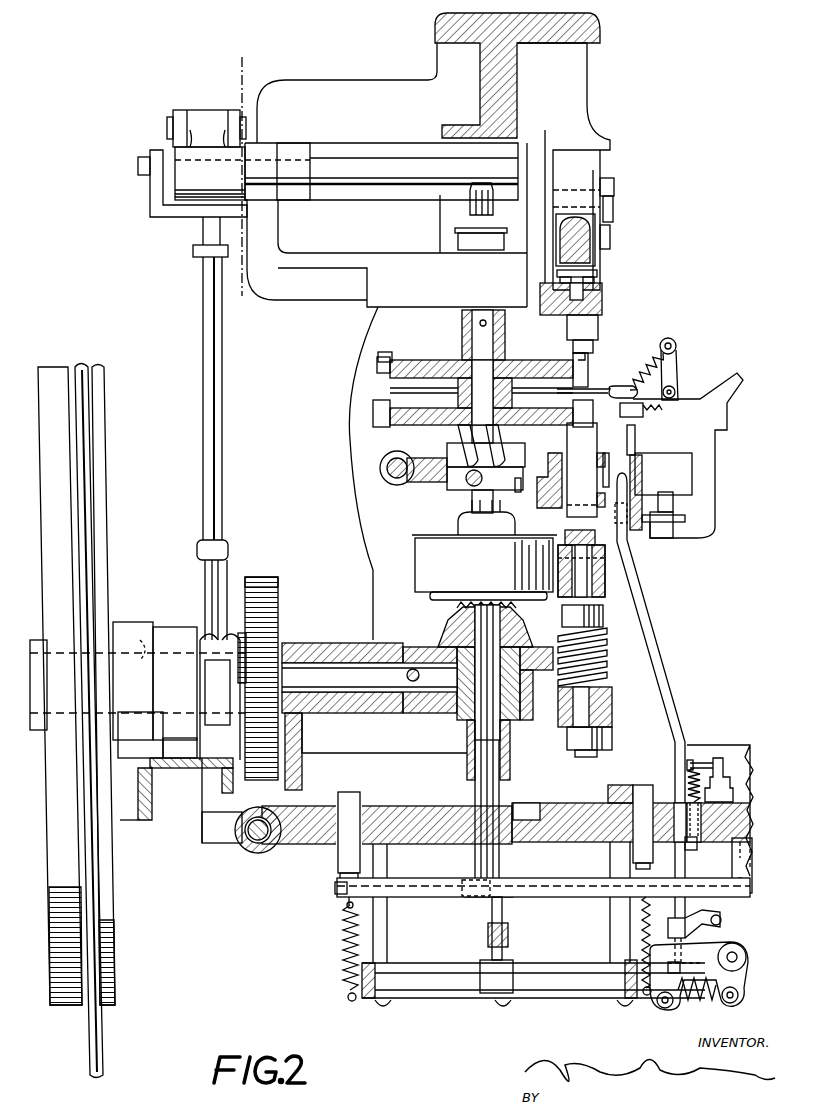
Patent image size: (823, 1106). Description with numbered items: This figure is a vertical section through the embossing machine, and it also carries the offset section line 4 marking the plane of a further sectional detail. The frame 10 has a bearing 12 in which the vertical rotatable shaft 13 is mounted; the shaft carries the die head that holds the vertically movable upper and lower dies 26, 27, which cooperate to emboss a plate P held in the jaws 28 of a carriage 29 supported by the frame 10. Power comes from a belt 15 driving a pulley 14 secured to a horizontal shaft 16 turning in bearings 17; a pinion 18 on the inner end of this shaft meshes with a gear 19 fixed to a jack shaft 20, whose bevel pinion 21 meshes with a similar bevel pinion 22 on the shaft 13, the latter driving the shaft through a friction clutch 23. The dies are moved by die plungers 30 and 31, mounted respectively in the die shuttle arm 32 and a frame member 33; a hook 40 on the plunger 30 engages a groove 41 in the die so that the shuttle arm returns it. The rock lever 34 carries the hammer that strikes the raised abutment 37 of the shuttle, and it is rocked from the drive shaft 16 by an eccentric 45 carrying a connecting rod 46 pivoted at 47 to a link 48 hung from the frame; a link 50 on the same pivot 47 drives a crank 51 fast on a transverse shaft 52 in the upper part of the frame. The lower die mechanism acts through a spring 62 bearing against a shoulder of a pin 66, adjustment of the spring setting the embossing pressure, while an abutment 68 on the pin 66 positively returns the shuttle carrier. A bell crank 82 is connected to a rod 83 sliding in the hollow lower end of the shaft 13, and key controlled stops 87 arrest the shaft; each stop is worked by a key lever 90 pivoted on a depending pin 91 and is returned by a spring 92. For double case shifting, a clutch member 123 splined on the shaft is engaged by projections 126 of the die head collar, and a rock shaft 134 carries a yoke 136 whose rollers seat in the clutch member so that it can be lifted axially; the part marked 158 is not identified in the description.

The section line 4— 4 is at (234, 60).
The frame 10 is at (746, 771).
The bearing 12 is at (497, 233).
The vertical rotatable shaft 13 is at (499, 862).
The pulley 14 is at (118, 962).
The driving belt 15 is at (103, 1038).
The horizontal shaft 16 is at (140, 690).
The bearings 17 is at (130, 620).
The pinion 18 is at (250, 622).
The gear 19 is at (278, 580).
The jack shaft 20 is at (328, 672).
The bevel pinion 21 is at (418, 700).
The bevel pinion 22 is at (455, 612).
The friction clutch 23 is at (484, 550).
The upper die 26 is at (390, 358).
The lower die 27 is at (388, 430).
The jaws 28 is at (636, 385).
The carriage 29 is at (687, 407).
The die plunger 30 is at (598, 325).
The die plunger 31 is at (586, 470).
The die shuttle arm 32 is at (601, 292).
The frame member 33 is at (550, 455).
The rock lever 34 is at (578, 232).
The raised abutment 37 is at (596, 276).
The hook 40 is at (590, 350).
The groove 41 is at (573, 365).
The eccentric 45 is at (212, 750).
The connecting rod 46 is at (222, 412).
The pivot 47 is at (141, 176).
The link 48 is at (160, 148).
The link 50 is at (178, 115).
The crank 51 is at (210, 173).
The transversely extending shaft 52 is at (360, 178).
The spring 62 is at (608, 658).
The pin 66 is at (612, 698).
The abutment 68 is at (612, 742).
The bell crank 82 is at (508, 940).
The rod 83 is at (503, 920).
The key controlled stops 87 is at (342, 858).
The key lever 90 is at (542, 887).
The depending pin 91 is at (752, 852).
The spring 92 is at (343, 945).
The clutch member 123 is at (450, 455).
The projections 126 is at (495, 445).
The rock shaft 134 is at (400, 485).
The yoke 136 is at (442, 487).
The pin 158 is at (518, 490).
The plate P is at (612, 388).